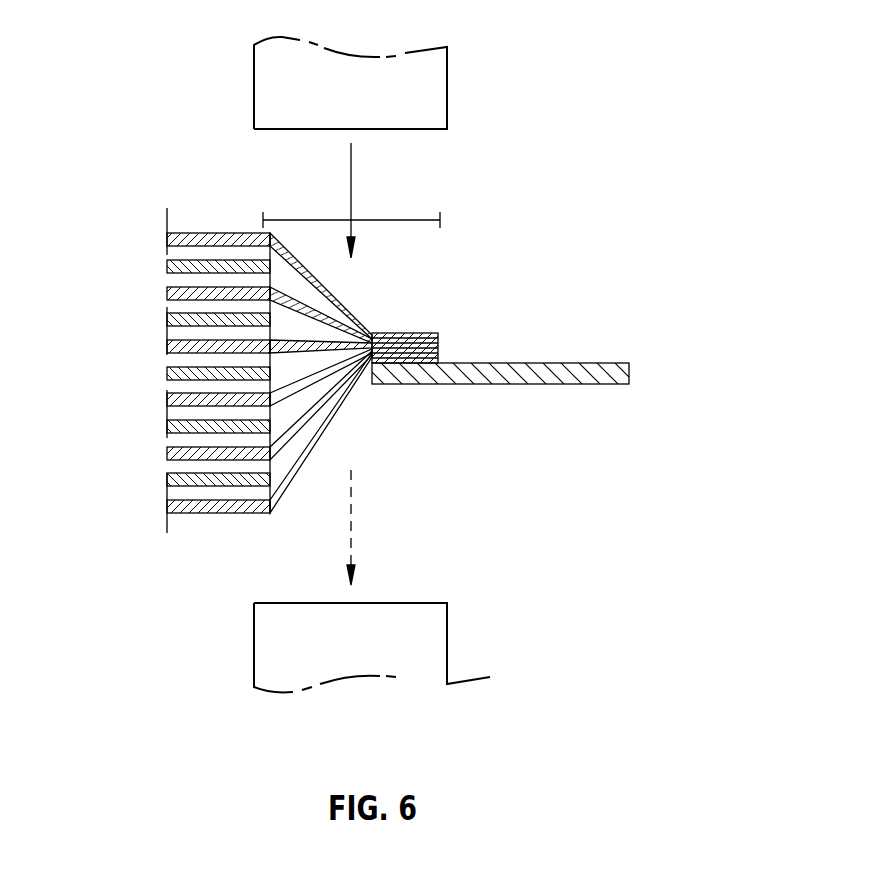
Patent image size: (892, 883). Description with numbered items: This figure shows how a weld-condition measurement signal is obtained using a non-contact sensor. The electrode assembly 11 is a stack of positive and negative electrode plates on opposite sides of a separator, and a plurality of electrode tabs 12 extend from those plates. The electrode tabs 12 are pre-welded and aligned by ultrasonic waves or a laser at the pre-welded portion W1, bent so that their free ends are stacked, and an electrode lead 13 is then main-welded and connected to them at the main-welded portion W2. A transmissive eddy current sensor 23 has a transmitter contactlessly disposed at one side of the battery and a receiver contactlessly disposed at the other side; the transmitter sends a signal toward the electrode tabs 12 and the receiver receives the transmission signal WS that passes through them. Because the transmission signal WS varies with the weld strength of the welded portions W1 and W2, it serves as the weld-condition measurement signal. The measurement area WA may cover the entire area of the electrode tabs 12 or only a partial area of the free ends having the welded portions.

The electrode assembly 11 is at (158, 233).
The electrode tabs 12 is at (347, 304).
The electrode lead 13 is at (580, 363).
The transmissive eddy current sensor 23 is at (448, 101).
The measurement area WA is at (411, 220).
The pre-welded portion W1 is at (395, 334).
The main-welded portion W2 is at (403, 363).
The transmission signal WS is at (353, 529).